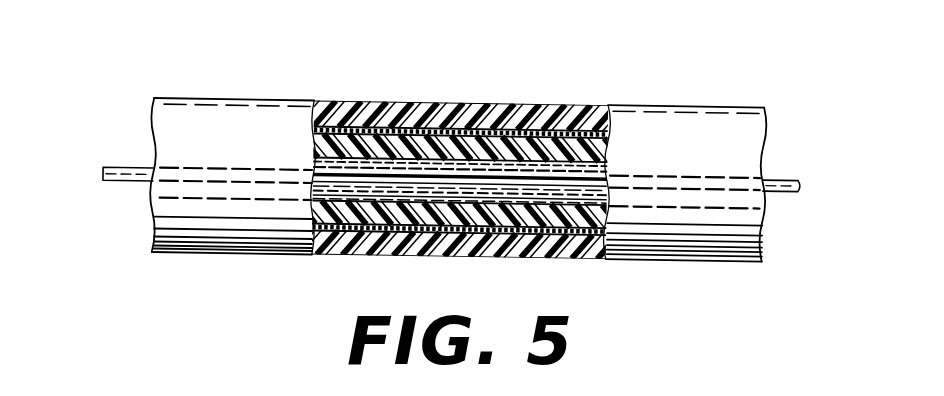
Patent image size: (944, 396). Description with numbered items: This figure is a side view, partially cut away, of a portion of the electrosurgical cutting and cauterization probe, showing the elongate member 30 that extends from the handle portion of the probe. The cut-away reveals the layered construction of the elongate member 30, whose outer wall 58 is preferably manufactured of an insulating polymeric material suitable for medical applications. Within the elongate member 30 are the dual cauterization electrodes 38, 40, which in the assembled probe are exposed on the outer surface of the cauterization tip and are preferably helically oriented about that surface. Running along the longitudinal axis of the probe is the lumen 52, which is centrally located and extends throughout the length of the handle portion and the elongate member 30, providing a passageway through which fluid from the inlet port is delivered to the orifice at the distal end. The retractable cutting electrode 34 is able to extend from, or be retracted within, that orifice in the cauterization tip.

The elongate member 30 is at (640, 108).
The retractable cutting electrode 34 is at (782, 182).
The cauterization electrode 38 is at (406, 246).
The cauterization electrode 40 is at (458, 128).
The lumen 52 is at (481, 198).
The outer wall 58 is at (374, 100).